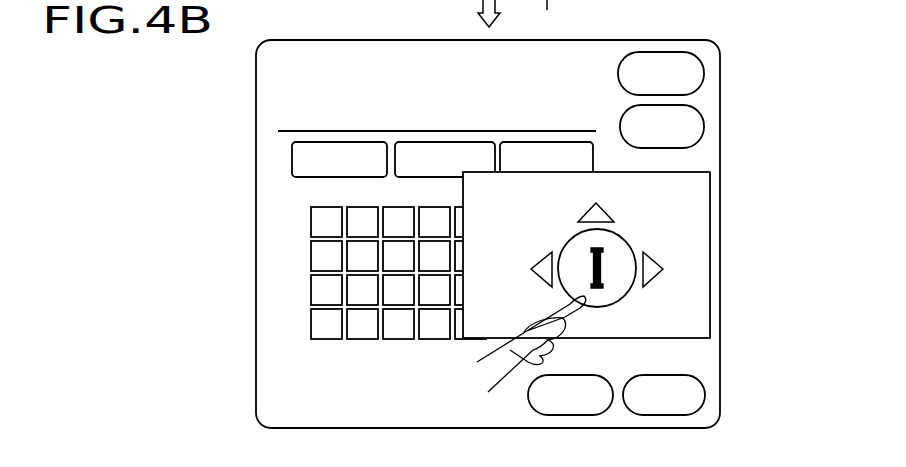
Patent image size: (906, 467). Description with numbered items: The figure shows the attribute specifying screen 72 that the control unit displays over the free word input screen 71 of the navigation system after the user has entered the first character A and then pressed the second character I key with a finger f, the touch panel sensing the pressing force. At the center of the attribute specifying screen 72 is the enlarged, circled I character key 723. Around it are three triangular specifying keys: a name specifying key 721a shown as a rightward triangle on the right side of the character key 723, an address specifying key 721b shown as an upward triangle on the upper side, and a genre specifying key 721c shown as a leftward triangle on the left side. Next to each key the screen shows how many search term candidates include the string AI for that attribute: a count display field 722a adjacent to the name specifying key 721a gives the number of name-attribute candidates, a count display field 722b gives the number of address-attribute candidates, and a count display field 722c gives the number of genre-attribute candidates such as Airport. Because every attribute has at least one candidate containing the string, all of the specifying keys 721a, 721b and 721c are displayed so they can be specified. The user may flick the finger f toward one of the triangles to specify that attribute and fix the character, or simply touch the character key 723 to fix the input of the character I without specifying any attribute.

The display screen 71 is at (721, 90).
The attribute specifying screen 72 is at (720, 233).
The name specifying key 721a is at (652, 253).
The address specifying key 721b is at (593, 217).
The genre specifying key 721c is at (552, 252).
The count display field 722a is at (676, 298).
The count display field 722b is at (683, 186).
The count display field 722c is at (502, 297).
The character key 723 is at (586, 297).
The finger f is at (585, 298).